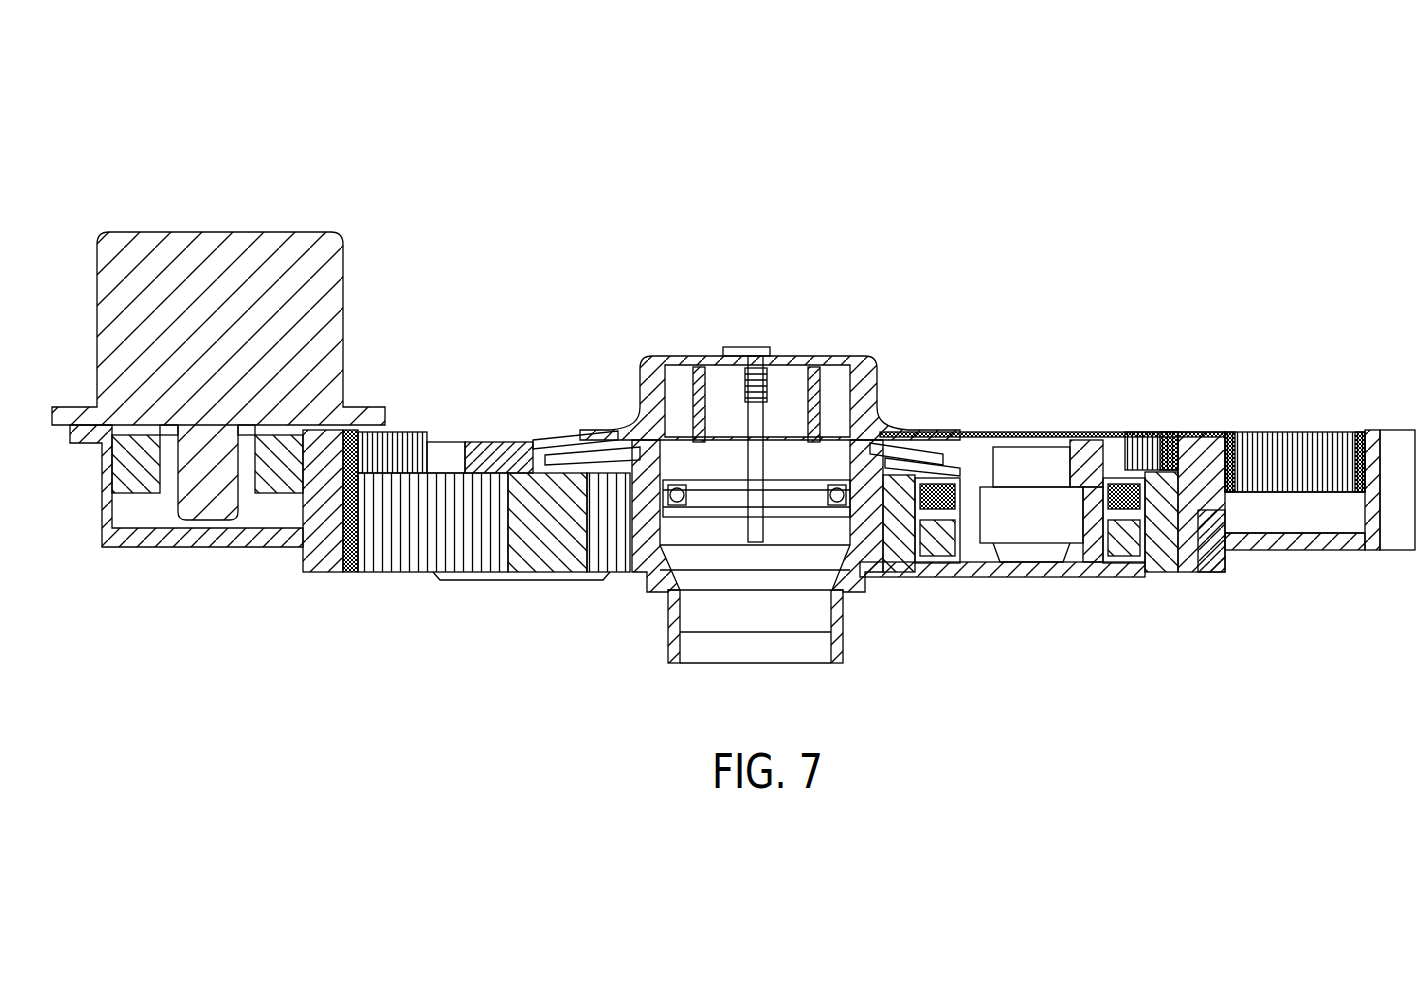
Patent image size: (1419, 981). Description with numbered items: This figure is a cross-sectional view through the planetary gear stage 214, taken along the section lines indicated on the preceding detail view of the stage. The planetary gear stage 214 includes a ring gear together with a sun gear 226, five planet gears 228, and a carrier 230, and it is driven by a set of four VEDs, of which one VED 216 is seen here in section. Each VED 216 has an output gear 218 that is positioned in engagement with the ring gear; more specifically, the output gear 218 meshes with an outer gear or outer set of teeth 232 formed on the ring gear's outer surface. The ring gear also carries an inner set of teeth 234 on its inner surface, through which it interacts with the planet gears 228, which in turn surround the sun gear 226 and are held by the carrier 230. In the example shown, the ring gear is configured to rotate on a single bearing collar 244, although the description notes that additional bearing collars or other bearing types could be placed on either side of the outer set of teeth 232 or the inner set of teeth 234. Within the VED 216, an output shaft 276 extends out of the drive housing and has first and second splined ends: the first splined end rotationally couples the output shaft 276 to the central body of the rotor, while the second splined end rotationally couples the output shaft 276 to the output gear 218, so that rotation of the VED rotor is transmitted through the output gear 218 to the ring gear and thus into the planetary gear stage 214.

The planetary gear stage 214 is at (360, 133).
The VED 216 is at (186, 250).
The output gear 218 is at (146, 486).
The sun gear 226 is at (720, 616).
The planet gear 228 is at (422, 522).
The carrier 230 is at (870, 394).
The outer set of teeth 232 is at (1240, 450).
The inner set of teeth 234 is at (1150, 440).
The bearing collar 244 is at (1213, 562).
The output shaft 276 is at (216, 496).